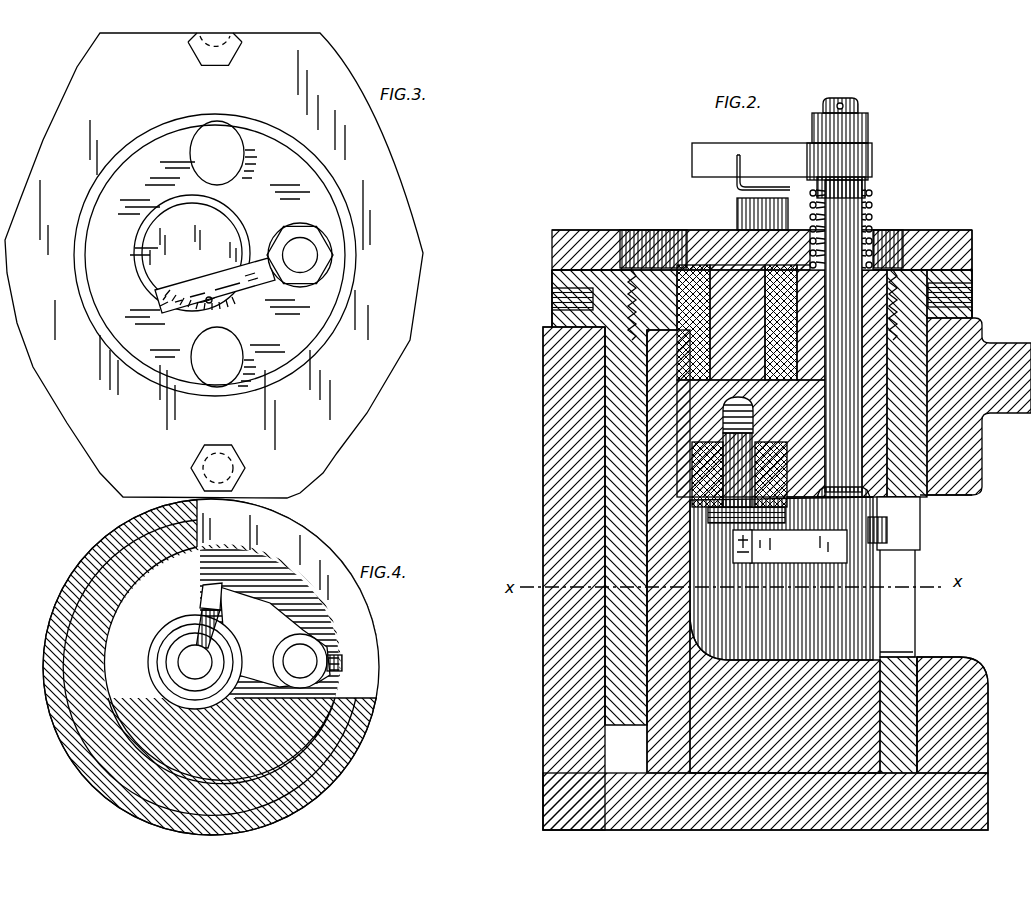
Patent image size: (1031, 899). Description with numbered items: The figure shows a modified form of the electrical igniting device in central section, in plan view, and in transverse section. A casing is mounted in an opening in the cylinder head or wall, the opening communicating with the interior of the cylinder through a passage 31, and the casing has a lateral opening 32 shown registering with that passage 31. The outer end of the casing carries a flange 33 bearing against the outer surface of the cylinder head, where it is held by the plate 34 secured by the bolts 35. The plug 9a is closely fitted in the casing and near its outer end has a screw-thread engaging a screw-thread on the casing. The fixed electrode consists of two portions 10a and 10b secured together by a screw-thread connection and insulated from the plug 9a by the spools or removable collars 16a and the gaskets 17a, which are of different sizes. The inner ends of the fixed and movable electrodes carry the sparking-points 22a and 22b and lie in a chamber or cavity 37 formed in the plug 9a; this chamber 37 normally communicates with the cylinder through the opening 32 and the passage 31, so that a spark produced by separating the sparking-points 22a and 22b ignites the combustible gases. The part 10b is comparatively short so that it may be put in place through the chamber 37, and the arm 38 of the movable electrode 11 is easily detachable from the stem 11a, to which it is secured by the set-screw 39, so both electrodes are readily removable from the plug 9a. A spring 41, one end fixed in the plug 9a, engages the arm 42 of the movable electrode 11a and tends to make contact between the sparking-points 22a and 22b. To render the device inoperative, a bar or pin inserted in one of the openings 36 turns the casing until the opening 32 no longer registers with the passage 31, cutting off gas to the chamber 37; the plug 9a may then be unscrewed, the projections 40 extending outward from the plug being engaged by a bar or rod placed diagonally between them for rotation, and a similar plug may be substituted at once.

In FIG. 2, the plug 9a is at (762, 477).
In FIG. 2, the fixed electrode portion 10a is at (751, 381).
In FIG. 4, the fixed electrode portion 10b is at (195, 662).
In FIG. 2, the fixed electrode portion 10b is at (735, 468).
In FIG. 2, the bore 11 is at (811, 322).
In FIG. 4, the stem of movable electrode 11a is at (307, 661).
In FIG. 2, the spools or removable collars 16a is at (732, 400).
In FIG. 2, the gaskets 17a is at (690, 265).
In FIG. 4, the sparking-point 22a is at (230, 584).
In FIG. 4, the sparking-point 22b is at (195, 659).
In FIG. 2, the passage 31 is at (787, 550).
In FIG. 2, the lateral opening 32 is at (898, 635).
In FIG. 2, the flange 33 is at (987, 272).
In FIG. 3, the plate 34 is at (214, 265).
In FIG. 2, the plate 34 is at (935, 232).
In FIG. 3, the bolts 35 is at (230, 438).
In FIG. 2, the openings 36 is at (987, 300).
In FIG. 4, the chamber or cavity 37 is at (211, 667).
In FIG. 2, the chamber or cavity 37 is at (781, 578).
In FIG. 4, the arm 38 is at (275, 637).
In FIG. 2, the arm 38 is at (777, 535).
In FIG. 2, the set-screw 39 is at (894, 523).
In FIG. 3, the projections 40 is at (223, 254).
In FIG. 2, the spring 41 is at (857, 338).
In FIG. 3, the arm 42 is at (194, 284).
In FIG. 2, the arm 42 is at (782, 164).